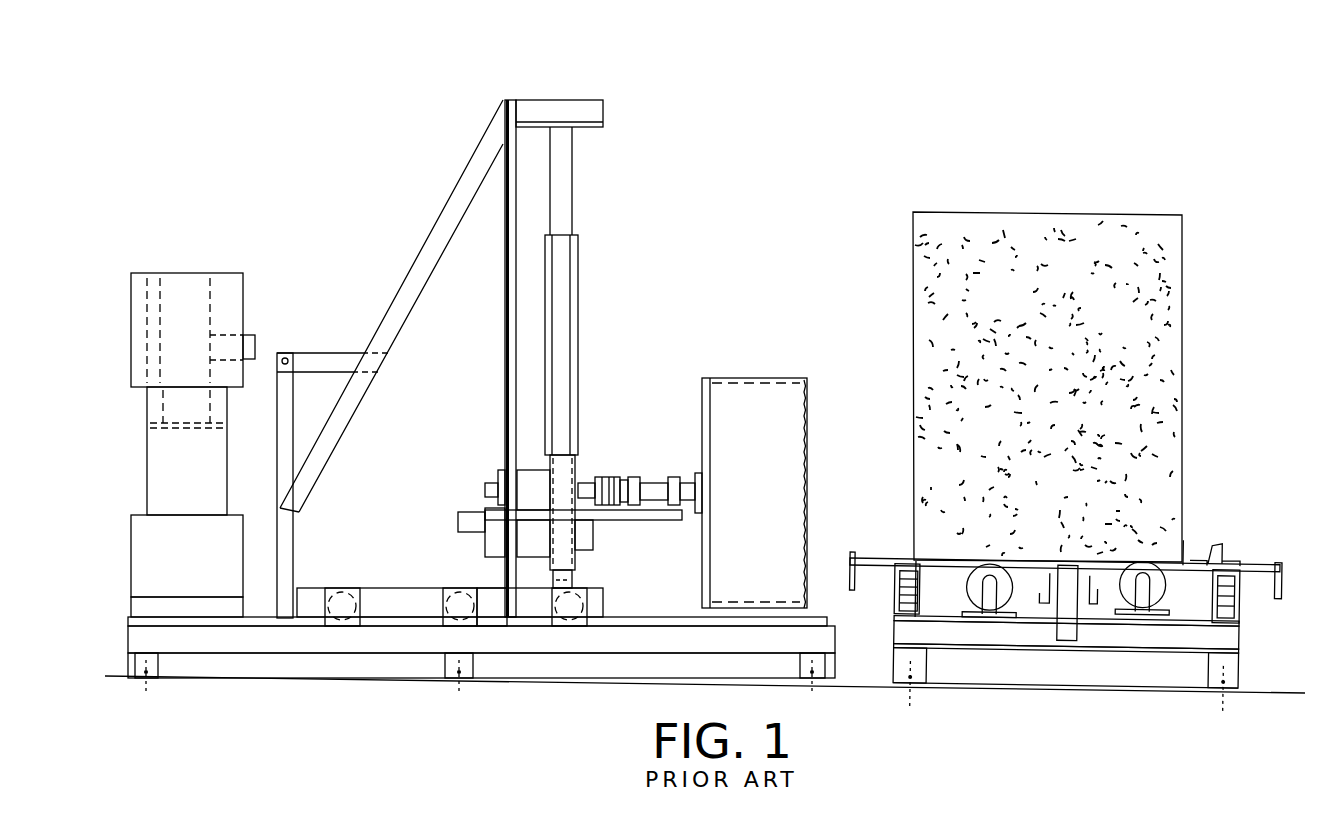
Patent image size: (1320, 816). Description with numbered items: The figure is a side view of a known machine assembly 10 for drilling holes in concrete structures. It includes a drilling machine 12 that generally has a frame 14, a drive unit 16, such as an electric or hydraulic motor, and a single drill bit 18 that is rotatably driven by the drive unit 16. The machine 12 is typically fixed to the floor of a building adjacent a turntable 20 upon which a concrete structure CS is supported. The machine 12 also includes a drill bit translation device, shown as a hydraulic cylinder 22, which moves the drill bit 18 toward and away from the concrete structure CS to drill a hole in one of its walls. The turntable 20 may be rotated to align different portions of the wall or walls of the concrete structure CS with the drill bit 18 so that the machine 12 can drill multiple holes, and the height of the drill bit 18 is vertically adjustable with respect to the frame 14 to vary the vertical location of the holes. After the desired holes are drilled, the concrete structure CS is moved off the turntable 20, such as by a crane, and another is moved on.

The machine assembly 10 is at (831, 122).
The drilling machine 12 is at (298, 183).
The frame 14 is at (462, 192).
The drive unit 16 is at (535, 522).
The drill bit 18 is at (766, 501).
The turntable 20 is at (1240, 562).
The hydraulic cylinder 22 is at (610, 480).
The concrete structure CS is at (1092, 253).